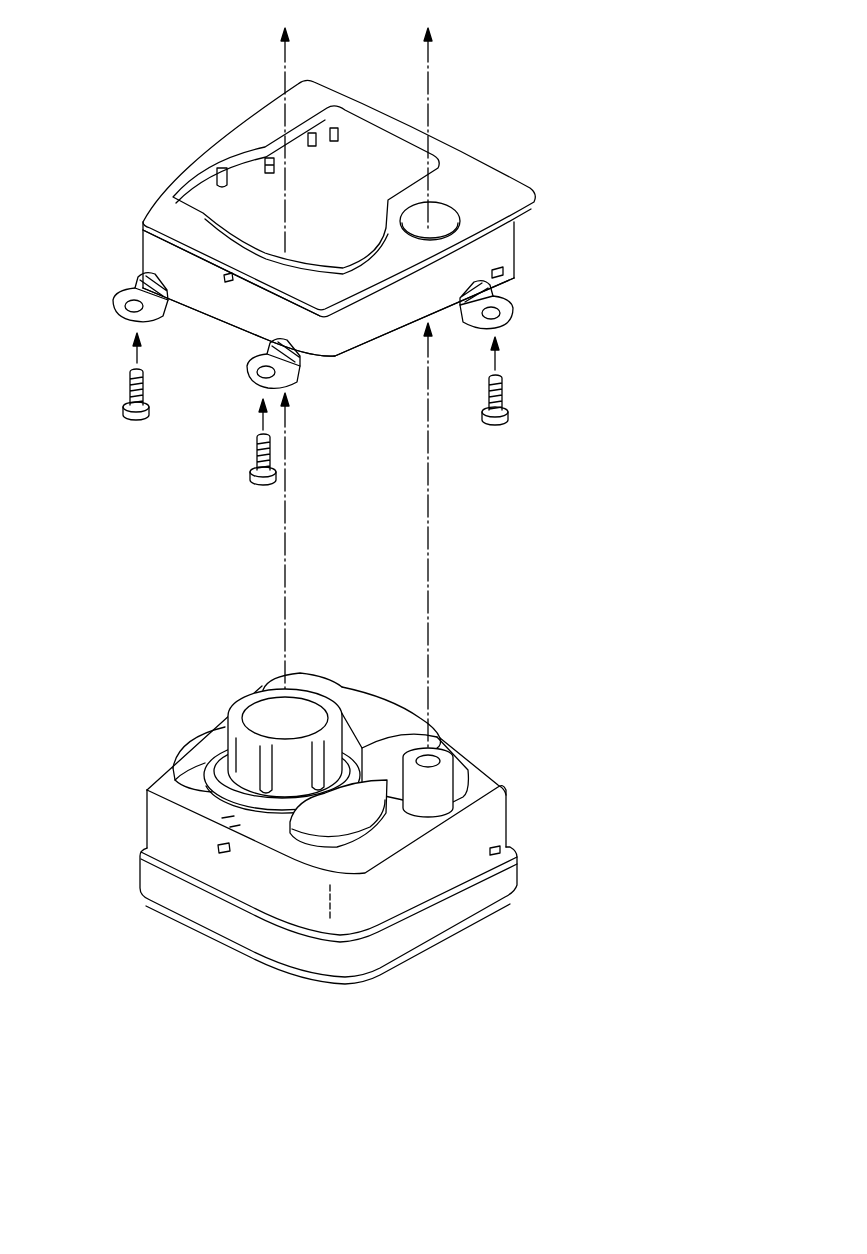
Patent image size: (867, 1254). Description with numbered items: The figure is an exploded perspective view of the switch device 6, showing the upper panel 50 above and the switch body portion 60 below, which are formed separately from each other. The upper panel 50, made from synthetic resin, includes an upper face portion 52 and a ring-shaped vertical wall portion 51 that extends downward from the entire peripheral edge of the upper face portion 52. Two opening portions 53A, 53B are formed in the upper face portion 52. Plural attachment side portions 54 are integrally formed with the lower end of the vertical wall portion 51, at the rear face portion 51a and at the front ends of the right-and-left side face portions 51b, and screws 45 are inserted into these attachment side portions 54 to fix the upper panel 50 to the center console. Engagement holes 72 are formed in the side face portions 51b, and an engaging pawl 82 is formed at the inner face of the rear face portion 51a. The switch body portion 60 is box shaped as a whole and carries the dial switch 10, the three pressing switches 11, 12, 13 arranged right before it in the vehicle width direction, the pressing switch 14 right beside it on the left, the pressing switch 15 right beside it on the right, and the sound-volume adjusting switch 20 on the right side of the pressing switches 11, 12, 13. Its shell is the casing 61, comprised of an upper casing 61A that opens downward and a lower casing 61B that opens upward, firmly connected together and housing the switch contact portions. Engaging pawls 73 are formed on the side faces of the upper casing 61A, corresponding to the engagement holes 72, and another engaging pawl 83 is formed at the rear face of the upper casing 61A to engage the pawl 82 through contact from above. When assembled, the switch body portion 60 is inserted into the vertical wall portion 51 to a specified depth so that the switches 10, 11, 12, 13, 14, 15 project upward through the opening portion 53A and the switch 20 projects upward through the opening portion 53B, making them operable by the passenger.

The switch device 6 is at (632, 207).
The dial switch 10 is at (263, 713).
The pressing switch 11 is at (333, 687).
The pressing switch 12 is at (378, 708).
The pressing switch 13 is at (413, 735).
The pressing switch 14 is at (193, 757).
The pressing switch 15 is at (340, 823).
The sound-volume adjusting switch 20 is at (452, 783).
The screw 45 is at (132, 417).
The upper panel 50 is at (514, 165).
The vertical wall portion 51 is at (372, 330).
The rear face portion 51a is at (218, 310).
The side face portion 51b is at (328, 317).
The upper face portion 52 is at (463, 180).
The opening portion 53A is at (370, 150).
The opening portion 53B is at (447, 222).
The attachment side portion 54 is at (115, 300).
The switch body portion 60 is at (523, 795).
The casing 61 is at (530, 1003).
The upper casing 61A is at (410, 877).
The lower casing 61B is at (480, 920).
The engagement hole 72 is at (507, 278).
The engaging pawl 73 is at (500, 855).
The engaging pawl 82 is at (225, 278).
The engaging pawl 83 is at (213, 857).